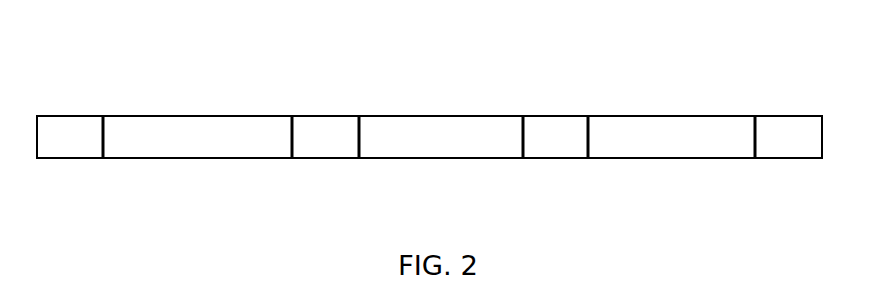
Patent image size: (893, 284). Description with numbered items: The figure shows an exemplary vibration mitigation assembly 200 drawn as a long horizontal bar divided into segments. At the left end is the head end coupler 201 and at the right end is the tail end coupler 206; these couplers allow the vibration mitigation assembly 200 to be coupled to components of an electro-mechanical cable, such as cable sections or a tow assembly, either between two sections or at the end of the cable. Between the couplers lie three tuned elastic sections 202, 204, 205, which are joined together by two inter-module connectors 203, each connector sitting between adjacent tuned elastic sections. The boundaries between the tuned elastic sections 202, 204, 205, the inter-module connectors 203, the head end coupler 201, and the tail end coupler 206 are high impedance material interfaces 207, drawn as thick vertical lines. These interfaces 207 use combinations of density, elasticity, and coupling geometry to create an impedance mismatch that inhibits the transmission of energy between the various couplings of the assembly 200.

The vibration mitigation assembly 200 is at (89, 26).
The head end coupler 201 is at (67, 116).
The tuned elastic section 202 is at (207, 116).
The inter-module connector 203 is at (325, 117).
The tuned elastic section 204 is at (440, 117).
The tuned elastic section 205 is at (673, 117).
The tail end coupler 206 is at (790, 117).
The high impedance material interface 207 is at (102, 160).